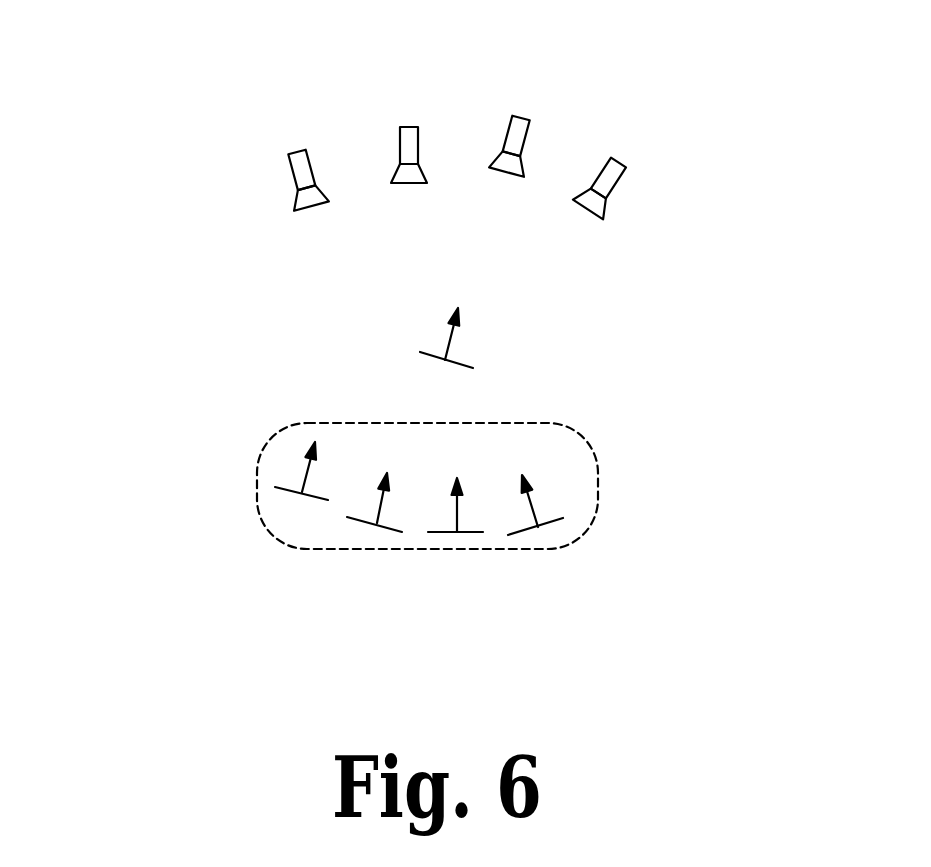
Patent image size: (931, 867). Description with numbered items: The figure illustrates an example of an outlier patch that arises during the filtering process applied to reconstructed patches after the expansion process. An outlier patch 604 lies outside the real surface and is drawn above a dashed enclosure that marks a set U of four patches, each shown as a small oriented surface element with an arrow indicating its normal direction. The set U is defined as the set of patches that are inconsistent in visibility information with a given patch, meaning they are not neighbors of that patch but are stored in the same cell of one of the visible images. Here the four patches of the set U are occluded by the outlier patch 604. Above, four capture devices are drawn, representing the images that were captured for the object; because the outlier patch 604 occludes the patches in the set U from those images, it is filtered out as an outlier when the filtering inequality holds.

The outlier patch 604 is at (427, 353).
The set of patches U is at (585, 443).